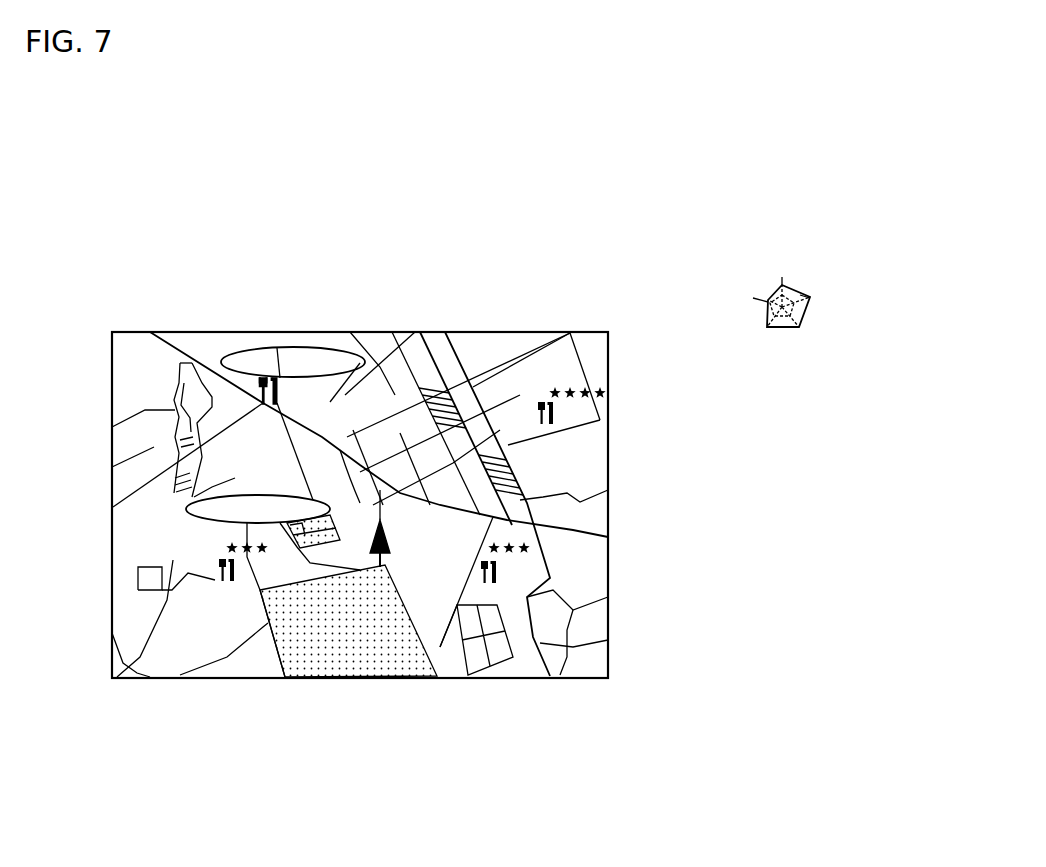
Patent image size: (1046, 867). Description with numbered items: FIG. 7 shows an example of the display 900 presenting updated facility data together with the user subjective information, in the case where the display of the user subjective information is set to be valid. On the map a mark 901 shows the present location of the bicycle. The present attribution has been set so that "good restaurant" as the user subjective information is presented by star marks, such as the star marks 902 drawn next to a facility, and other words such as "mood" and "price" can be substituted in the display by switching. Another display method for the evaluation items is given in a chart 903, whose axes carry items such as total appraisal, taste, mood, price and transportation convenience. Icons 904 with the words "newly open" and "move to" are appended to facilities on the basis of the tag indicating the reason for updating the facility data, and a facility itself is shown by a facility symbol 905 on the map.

The display 900 is at (505, 332).
The mark for the present location 901 is at (383, 540).
The appraisal star rating 902 is at (608, 393).
The chart 903 is at (808, 312).
The comment balloon 904 is at (277, 348).
The restaurant icon 905 is at (563, 418).